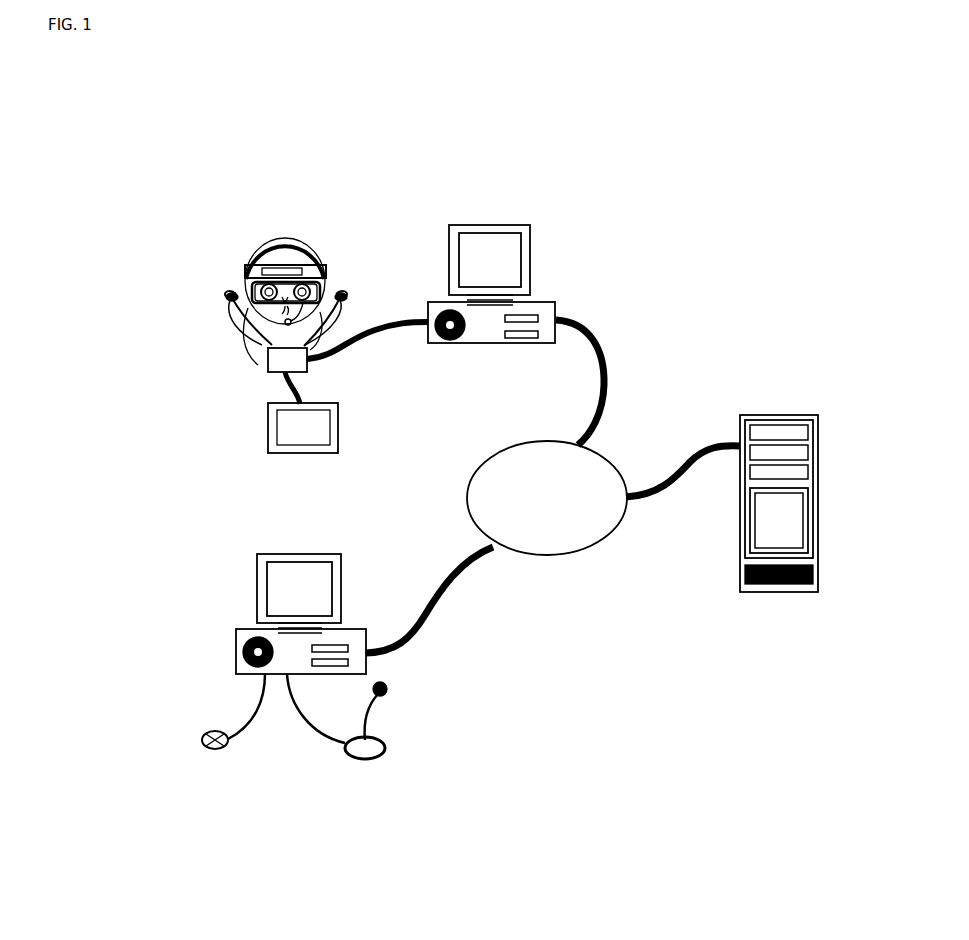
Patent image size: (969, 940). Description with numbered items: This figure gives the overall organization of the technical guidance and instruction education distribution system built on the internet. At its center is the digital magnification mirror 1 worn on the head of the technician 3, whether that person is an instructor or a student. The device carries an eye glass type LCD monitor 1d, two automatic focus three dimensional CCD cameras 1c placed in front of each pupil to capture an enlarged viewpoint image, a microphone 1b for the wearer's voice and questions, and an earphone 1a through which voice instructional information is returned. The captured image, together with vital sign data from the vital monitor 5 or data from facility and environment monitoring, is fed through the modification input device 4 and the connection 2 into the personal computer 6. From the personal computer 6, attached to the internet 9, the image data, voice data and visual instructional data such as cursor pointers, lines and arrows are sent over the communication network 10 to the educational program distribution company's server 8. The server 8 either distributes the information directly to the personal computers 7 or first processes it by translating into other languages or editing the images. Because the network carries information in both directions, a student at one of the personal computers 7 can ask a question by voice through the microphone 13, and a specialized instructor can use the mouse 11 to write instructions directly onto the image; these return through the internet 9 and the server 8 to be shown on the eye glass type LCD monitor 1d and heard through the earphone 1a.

The digital magnification mirror 1 is at (270, 348).
The earphone 1a is at (348, 286).
The microphone 1b is at (268, 348).
The CCD cameras 1c is at (281, 329).
The eye glass type LCD monitor 1d is at (283, 327).
The connection cable 2 is at (348, 341).
The technician 3 is at (278, 247).
The modification input device 4 is at (311, 365).
The vital monitor 5 is at (309, 455).
The personal computer device 6 is at (507, 272).
The personal computers 7 is at (298, 549).
The server 8 is at (779, 411).
The internet 9 is at (586, 492).
The network connection 10 is at (598, 333).
The mouse 11 is at (220, 751).
The microphone 13 is at (379, 758).